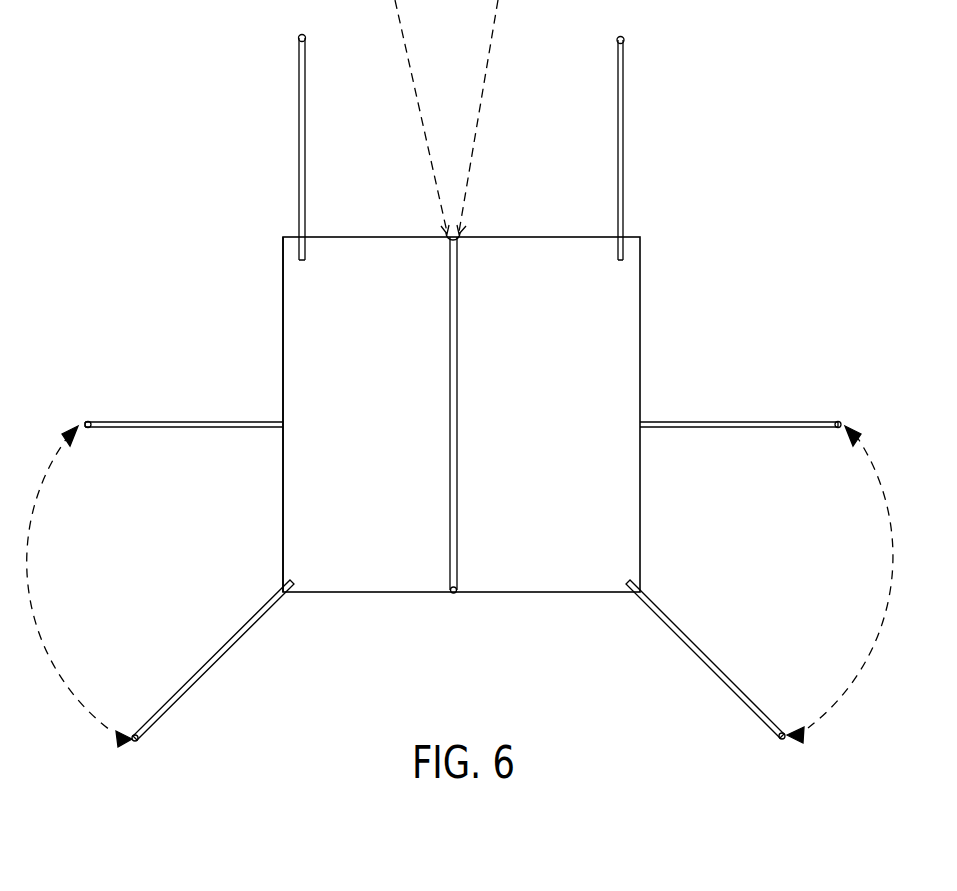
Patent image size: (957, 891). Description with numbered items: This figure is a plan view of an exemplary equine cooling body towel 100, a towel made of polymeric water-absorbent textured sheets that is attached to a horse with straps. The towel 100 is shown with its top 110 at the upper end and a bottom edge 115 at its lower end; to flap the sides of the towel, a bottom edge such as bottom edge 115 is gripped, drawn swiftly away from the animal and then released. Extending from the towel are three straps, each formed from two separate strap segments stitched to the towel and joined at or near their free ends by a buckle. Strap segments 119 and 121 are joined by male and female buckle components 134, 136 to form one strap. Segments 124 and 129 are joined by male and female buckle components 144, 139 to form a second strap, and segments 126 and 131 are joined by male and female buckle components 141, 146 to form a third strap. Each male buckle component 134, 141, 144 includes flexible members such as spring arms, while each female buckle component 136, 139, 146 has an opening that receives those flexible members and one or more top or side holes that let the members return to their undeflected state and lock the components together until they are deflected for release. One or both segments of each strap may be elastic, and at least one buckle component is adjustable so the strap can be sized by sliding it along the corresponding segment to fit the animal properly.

The equine cooling body towel 100 is at (378, 603).
The top of the towel 110 is at (453, 592).
The bottom edge 115 is at (282, 332).
The strap segment 119 is at (623, 143).
The strap segment 121 is at (306, 148).
The strap segment 124 is at (727, 428).
The strap segment 126 is at (180, 428).
The strap segment 129 is at (695, 655).
The strap segment 131 is at (212, 668).
The male buckle component 134 is at (618, 40).
The female buckle component 136 is at (302, 38).
The female buckle component 139 is at (842, 428).
The male buckle component 141 is at (82, 428).
The male buckle component 144 is at (782, 740).
The female buckle component 146 is at (135, 742).